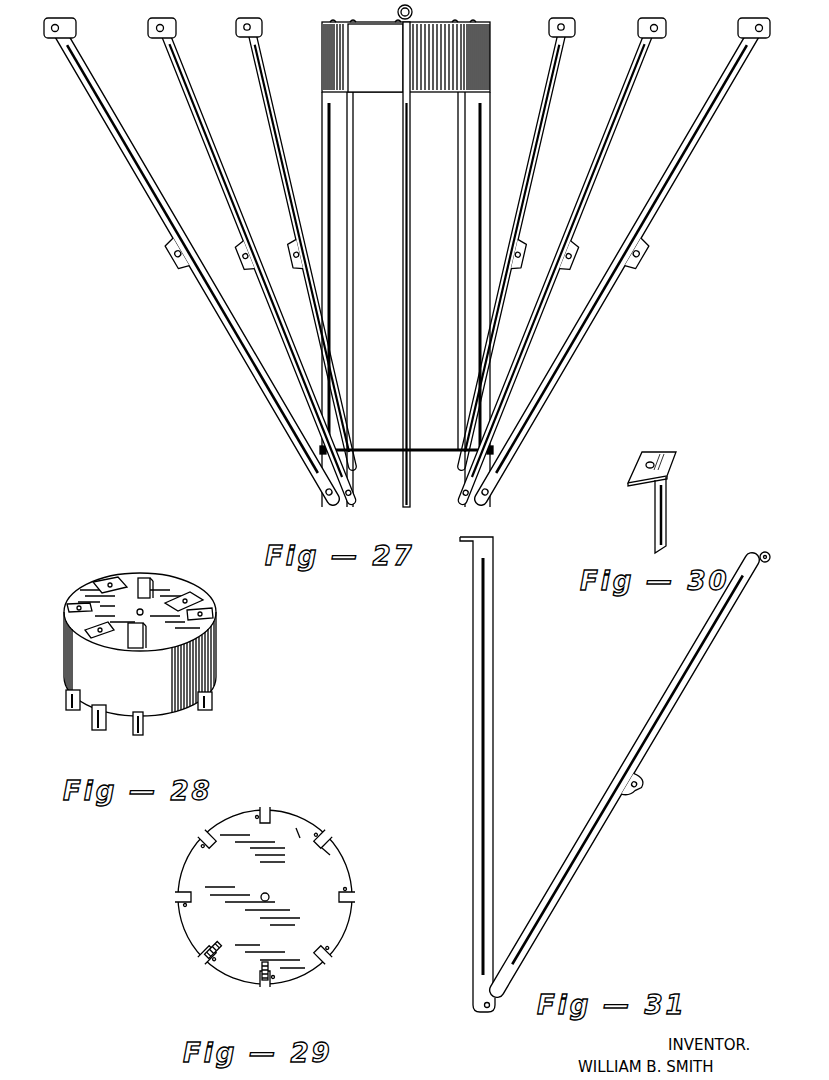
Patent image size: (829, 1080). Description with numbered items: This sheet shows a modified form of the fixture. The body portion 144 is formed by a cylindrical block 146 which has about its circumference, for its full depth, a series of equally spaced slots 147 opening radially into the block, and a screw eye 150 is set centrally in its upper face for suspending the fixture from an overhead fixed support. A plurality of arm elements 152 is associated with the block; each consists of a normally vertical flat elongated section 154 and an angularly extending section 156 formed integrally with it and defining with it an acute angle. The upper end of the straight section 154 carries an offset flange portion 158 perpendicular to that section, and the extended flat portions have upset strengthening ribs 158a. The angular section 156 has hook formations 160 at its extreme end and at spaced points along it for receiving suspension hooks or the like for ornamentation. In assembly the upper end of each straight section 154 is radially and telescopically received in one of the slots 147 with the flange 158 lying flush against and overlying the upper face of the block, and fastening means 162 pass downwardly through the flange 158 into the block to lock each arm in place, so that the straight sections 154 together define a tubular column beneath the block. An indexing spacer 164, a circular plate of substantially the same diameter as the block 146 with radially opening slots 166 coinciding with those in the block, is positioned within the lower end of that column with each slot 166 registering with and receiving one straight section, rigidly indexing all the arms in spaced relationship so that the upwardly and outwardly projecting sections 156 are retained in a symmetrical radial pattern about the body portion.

In FIG. 27, the body portion 144 is at (408, 266).
In FIG. 27, the cylindrical block 146 is at (485, 63).
In FIG. 28, the cylindrical block 146 is at (170, 654).
In FIG. 28, the slots 147 is at (200, 662).
In FIG. 27, the screw eye 150 is at (413, 10).
In FIG. 31, the arm elements 152 is at (624, 775).
In FIG. 29, the flat elongated section 154 is at (265, 975).
In FIG. 31, the flat elongated section 154 is at (493, 683).
In FIG. 31, the angularly extending section 156 is at (667, 716).
In FIG. 28, the offset flange portion 158 is at (180, 595).
In FIG. 30, the offset flange portion 158 is at (668, 452).
In FIG. 31, the upset strengthening ribs 158a is at (490, 727).
In FIG. 31, the hook formations 160 is at (766, 565).
In FIG. 27, the fastening means 162 is at (443, 456).
In FIG. 28, the fastening means 162 is at (148, 582).
In FIG. 29, the fastening means 162 is at (293, 840).
In FIG. 29, the indexing spacer 164 is at (320, 880).
In FIG. 29, the radially opening slots 166 is at (322, 850).